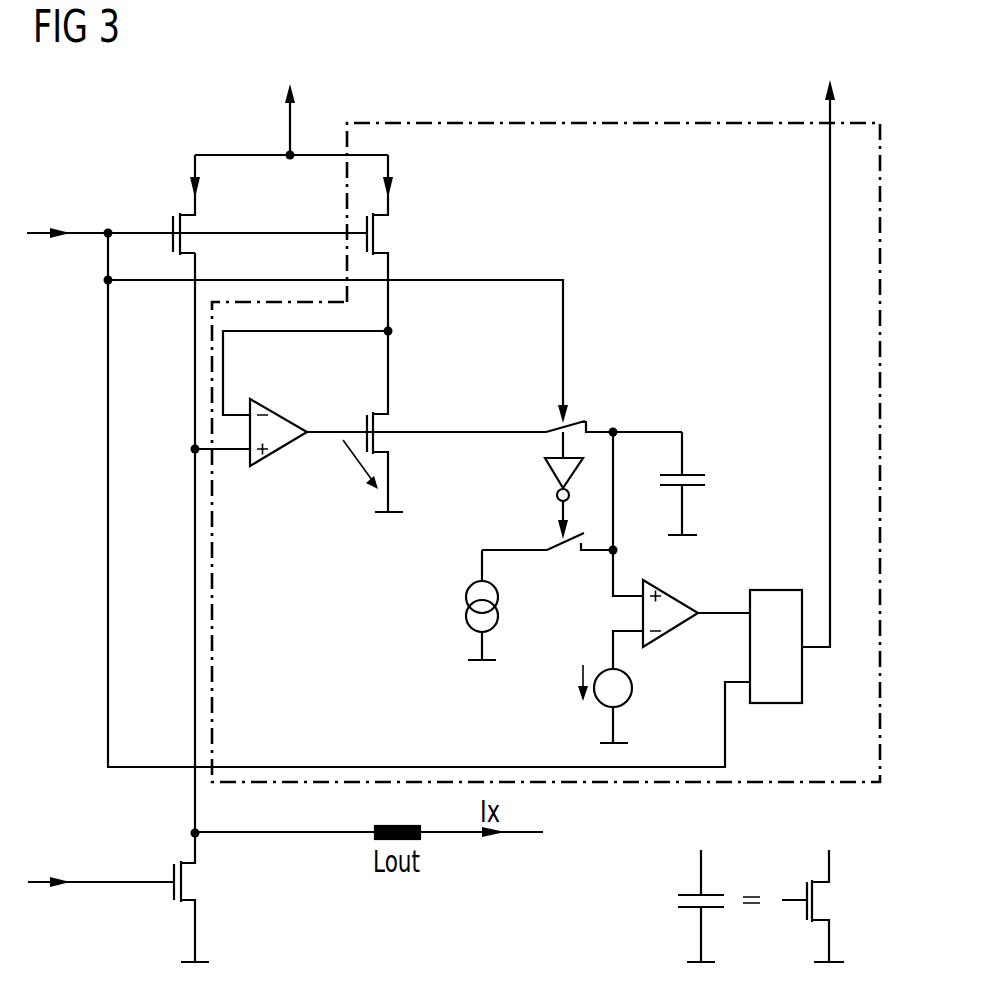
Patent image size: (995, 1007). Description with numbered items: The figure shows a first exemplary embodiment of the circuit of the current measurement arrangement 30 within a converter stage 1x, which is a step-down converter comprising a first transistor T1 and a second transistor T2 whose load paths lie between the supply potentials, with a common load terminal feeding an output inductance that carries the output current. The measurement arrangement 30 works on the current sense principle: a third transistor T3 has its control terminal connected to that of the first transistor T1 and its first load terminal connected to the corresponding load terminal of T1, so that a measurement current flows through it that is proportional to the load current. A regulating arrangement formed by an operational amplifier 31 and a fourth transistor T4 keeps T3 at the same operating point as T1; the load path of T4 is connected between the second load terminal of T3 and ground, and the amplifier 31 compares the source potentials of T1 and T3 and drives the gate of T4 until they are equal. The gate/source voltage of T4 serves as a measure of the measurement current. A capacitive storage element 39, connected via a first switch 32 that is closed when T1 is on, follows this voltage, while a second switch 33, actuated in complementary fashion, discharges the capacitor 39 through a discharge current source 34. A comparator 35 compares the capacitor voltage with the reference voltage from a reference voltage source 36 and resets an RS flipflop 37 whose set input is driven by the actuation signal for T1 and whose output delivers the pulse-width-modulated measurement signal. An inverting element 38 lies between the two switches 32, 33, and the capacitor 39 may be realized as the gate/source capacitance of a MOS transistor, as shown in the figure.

The converter stage 1x is at (140, 157).
The current measurement arrangement 30 is at (620, 122).
The operational amplifier 31 is at (279, 412).
The first switch 32 is at (557, 422).
The second switch 33 is at (560, 553).
The discharge current source 34 is at (466, 617).
The comparator 35 is at (676, 630).
The reference voltage source 36 is at (634, 690).
The RS-type flipflop 37 is at (775, 590).
The inverter 38 is at (545, 473).
The capacitive storage element 39 is at (712, 480).
The first transistor T1 is at (182, 238).
The second transistor T2 is at (183, 885).
The third transistor T3 is at (377, 238).
The fourth transistor T4 is at (372, 410).